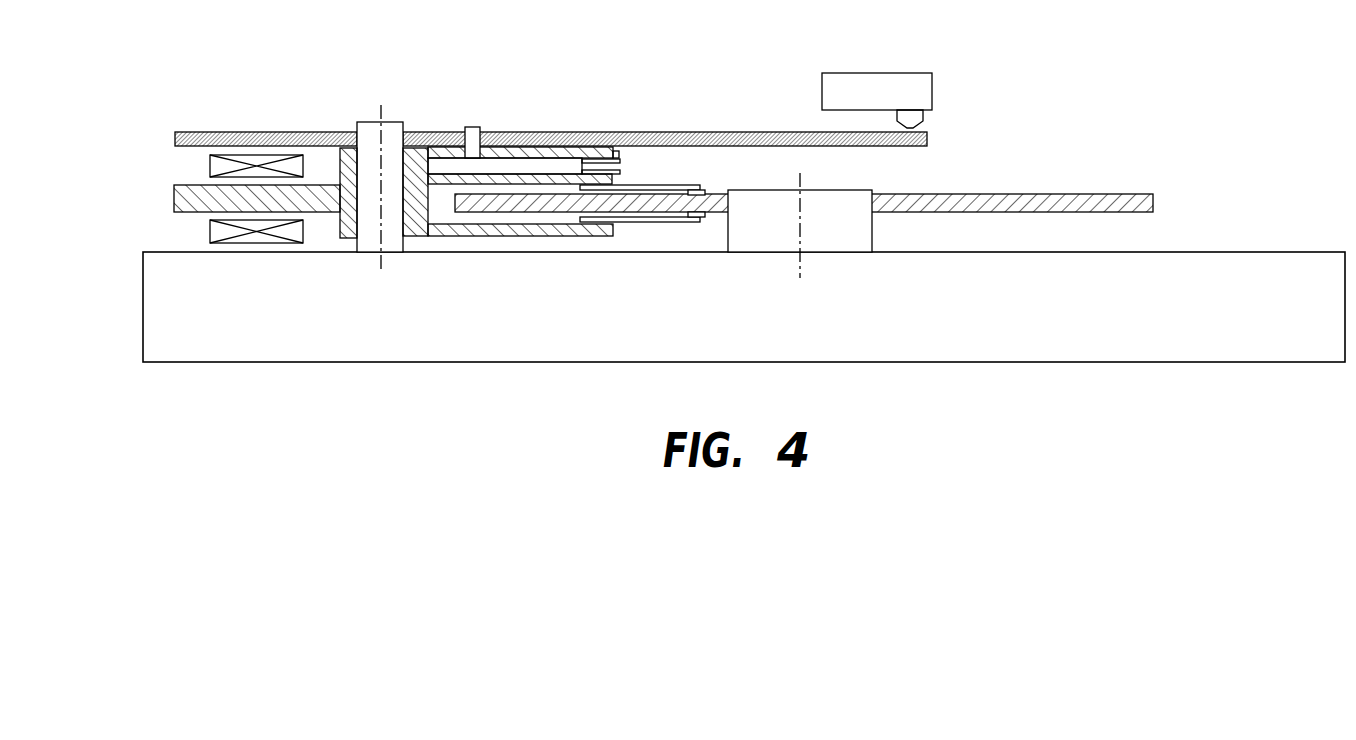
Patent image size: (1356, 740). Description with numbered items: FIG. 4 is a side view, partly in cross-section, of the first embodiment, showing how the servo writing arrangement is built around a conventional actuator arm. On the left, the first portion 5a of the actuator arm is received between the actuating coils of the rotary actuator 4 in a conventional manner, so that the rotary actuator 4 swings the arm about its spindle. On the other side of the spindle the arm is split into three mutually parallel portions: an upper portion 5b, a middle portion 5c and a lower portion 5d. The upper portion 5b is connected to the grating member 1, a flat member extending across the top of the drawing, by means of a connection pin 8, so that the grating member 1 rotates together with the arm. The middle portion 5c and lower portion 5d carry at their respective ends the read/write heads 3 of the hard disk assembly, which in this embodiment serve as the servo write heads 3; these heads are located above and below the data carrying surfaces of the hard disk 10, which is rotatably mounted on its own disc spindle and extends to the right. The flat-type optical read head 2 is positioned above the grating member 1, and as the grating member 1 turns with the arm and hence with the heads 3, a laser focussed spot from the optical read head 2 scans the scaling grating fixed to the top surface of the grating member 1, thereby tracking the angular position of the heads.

The grating member 1 is at (684, 132).
The flat-type optical read head 2 is at (903, 73).
The servo write heads 3 is at (705, 190).
The rotary actuator 4 is at (210, 167).
The first portion 5a is at (174, 200).
The upper portion 5b is at (530, 155).
The middle portion 5c is at (600, 181).
The lower portion 5d is at (472, 236).
The connection pin 8 is at (472, 127).
The hard disk 10 is at (1100, 193).